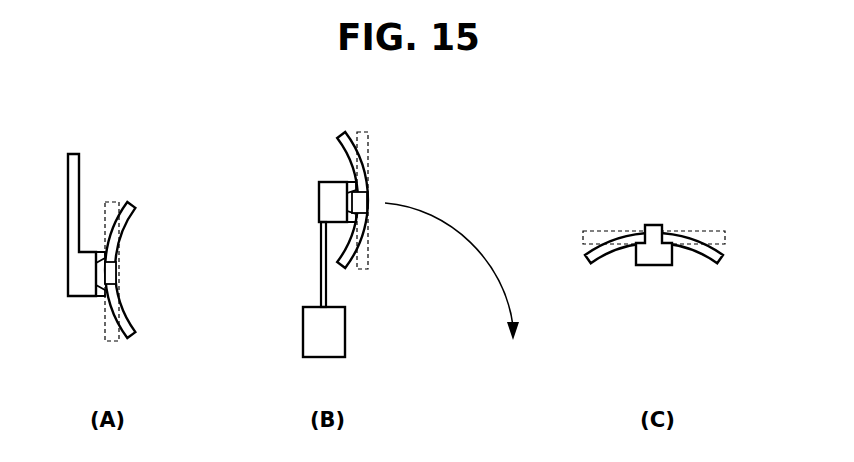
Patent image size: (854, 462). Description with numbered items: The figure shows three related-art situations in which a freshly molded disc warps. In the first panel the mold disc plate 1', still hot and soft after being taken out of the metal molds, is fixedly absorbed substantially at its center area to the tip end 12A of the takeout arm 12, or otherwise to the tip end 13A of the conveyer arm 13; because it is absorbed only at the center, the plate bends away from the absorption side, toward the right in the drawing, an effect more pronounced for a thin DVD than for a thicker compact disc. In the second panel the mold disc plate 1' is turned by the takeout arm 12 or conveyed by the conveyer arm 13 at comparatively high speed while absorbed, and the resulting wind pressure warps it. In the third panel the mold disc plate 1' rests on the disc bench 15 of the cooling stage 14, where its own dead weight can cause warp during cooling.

The mold disc plate 1' is at (441, 211).
The takeout arm 12 is at (207, 249).
The conveyer arm 13 is at (82, 176).
The tip end of takeout arm 12A is at (199, 287).
The tip end of conveyer arm 13A is at (100, 297).
The cooling stage 14 is at (624, 270).
The disc bench 15 is at (652, 258).